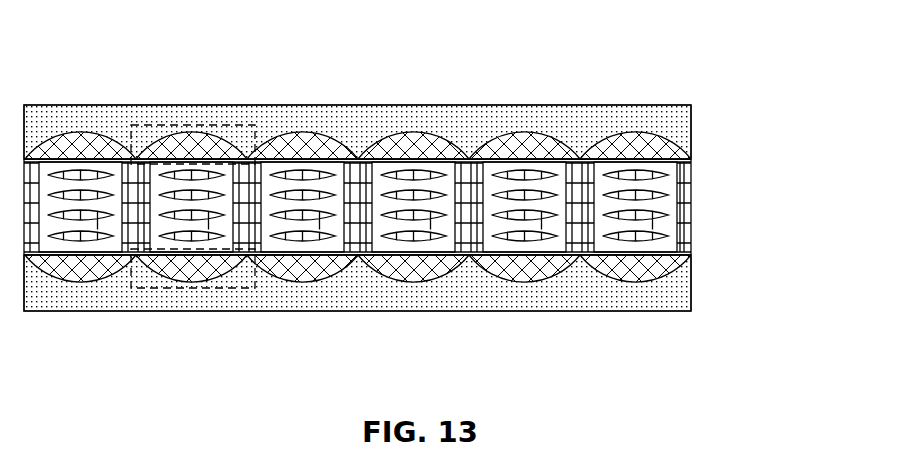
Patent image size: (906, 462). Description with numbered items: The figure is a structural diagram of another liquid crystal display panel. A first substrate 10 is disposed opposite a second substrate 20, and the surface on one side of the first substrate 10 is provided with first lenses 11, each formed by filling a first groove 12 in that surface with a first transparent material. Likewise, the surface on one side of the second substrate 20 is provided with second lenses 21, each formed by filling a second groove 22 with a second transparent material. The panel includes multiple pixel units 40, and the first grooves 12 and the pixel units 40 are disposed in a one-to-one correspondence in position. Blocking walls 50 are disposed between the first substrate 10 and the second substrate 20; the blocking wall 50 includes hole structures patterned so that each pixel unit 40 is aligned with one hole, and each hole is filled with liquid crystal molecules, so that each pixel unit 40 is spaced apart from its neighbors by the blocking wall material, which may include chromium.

The first substrate 10 is at (691, 105).
The first lens 11 is at (77, 145).
The first groove 12 is at (188, 127).
The second substrate 20 is at (691, 290).
The second lens 21 is at (83, 273).
The second groove 22 is at (197, 290).
The pixel unit 40 is at (413, 150).
The blocking wall 50 is at (685, 202).